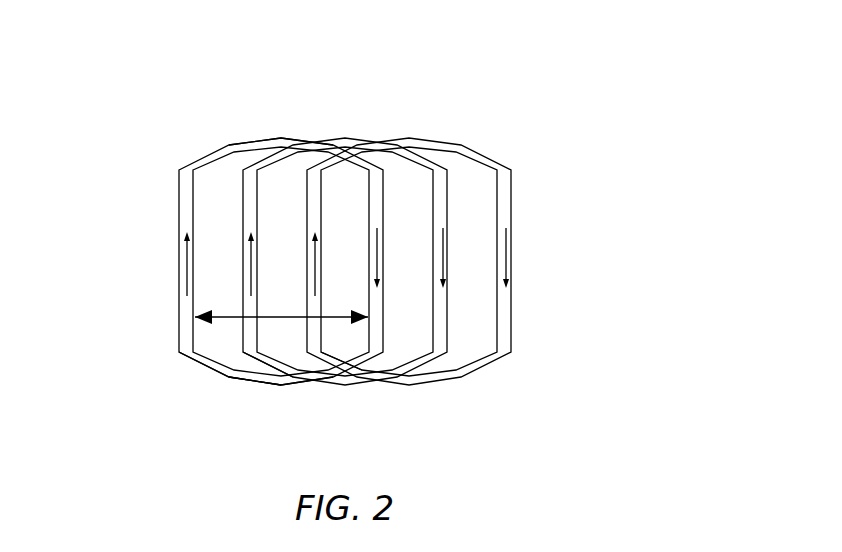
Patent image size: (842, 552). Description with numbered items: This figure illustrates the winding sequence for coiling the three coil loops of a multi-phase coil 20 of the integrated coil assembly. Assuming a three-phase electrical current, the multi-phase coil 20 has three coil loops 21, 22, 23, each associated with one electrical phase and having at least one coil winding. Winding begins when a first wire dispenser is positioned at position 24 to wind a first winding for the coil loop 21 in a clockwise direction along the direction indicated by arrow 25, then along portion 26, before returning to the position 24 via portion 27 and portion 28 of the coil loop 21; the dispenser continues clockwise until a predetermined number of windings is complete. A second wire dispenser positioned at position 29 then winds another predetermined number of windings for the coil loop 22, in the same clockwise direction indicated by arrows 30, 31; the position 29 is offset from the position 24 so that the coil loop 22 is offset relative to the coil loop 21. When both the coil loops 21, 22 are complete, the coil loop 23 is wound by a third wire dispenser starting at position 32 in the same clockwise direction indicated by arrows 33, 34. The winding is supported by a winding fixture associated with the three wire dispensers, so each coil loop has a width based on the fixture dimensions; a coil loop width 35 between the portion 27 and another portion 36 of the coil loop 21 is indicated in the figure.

The multi-phase coil 20 is at (655, 122).
The coil loop 21 is at (207, 160).
The coil loop 22 is at (345, 138).
The coil loop 23 is at (470, 140).
The position 24 is at (180, 350).
The arrow 25 is at (183, 256).
The portion 26 is at (272, 138).
The portion 27 is at (388, 312).
The portion 28 is at (265, 385).
The position 29 is at (240, 355).
The arrow 30 is at (254, 281).
The arrow 31 is at (445, 278).
The position 32 is at (324, 340).
The arrow 33 is at (312, 257).
The arrow 34 is at (512, 241).
The coil loop width 35 is at (195, 317).
The portion 36 is at (275, 298).